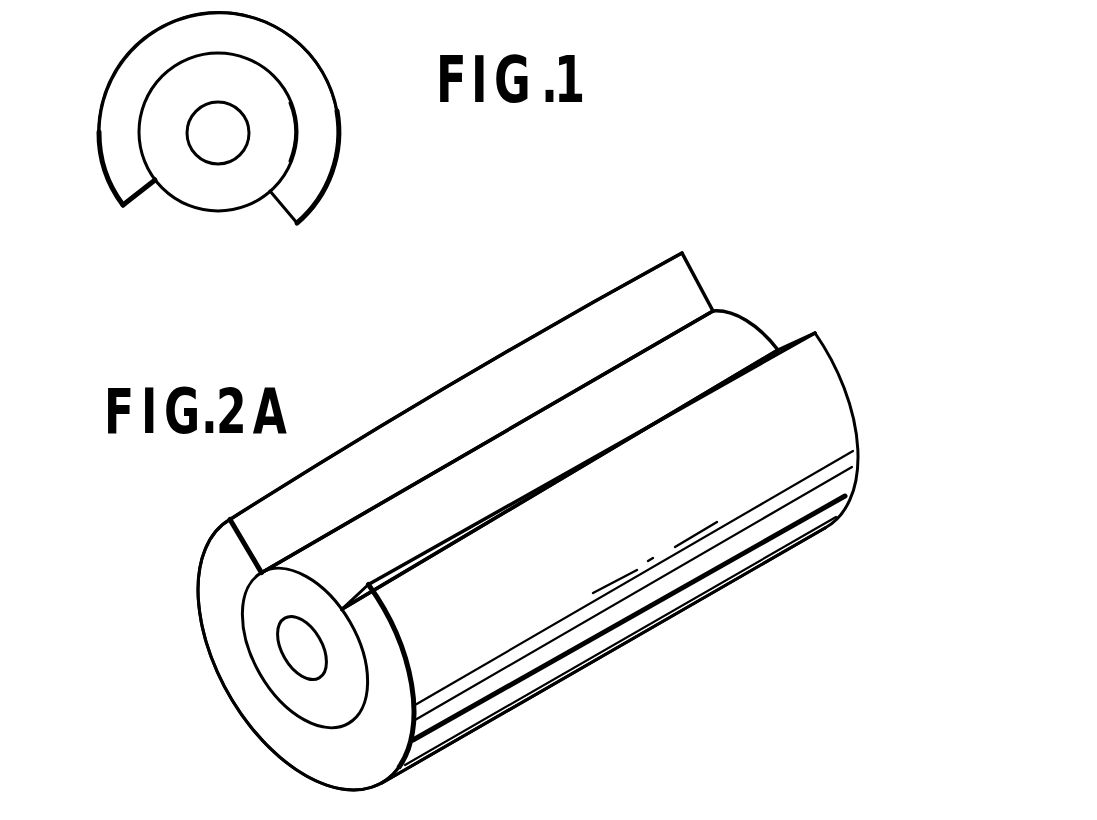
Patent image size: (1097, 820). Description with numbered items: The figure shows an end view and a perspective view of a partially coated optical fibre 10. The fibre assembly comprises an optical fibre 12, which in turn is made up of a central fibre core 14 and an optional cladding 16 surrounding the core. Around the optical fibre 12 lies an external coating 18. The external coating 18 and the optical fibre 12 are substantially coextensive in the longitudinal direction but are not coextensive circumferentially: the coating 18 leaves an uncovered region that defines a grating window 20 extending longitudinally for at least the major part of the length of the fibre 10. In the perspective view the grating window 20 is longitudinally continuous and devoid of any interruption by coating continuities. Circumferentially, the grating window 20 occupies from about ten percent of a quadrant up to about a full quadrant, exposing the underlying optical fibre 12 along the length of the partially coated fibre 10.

In FIG. 1, the partially coated optical fibre 10 is at (412, 223).
In FIG. 2A, the partially coated optical fibre 10 is at (594, 747).
In FIG. 1, the optical fibre 12 is at (304, 138).
In FIG. 1, the fibre core 14 is at (213, 120).
In FIG. 2A, the fibre core 14 is at (297, 657).
In FIG. 1, the cladding 16 is at (160, 112).
In FIG. 2A, the cladding 16 is at (256, 639).
In FIG. 1, the external coating 18 is at (113, 132).
In FIG. 2A, the external coating 18 is at (218, 562).
In FIG. 2A, the grating window 20 is at (461, 420).